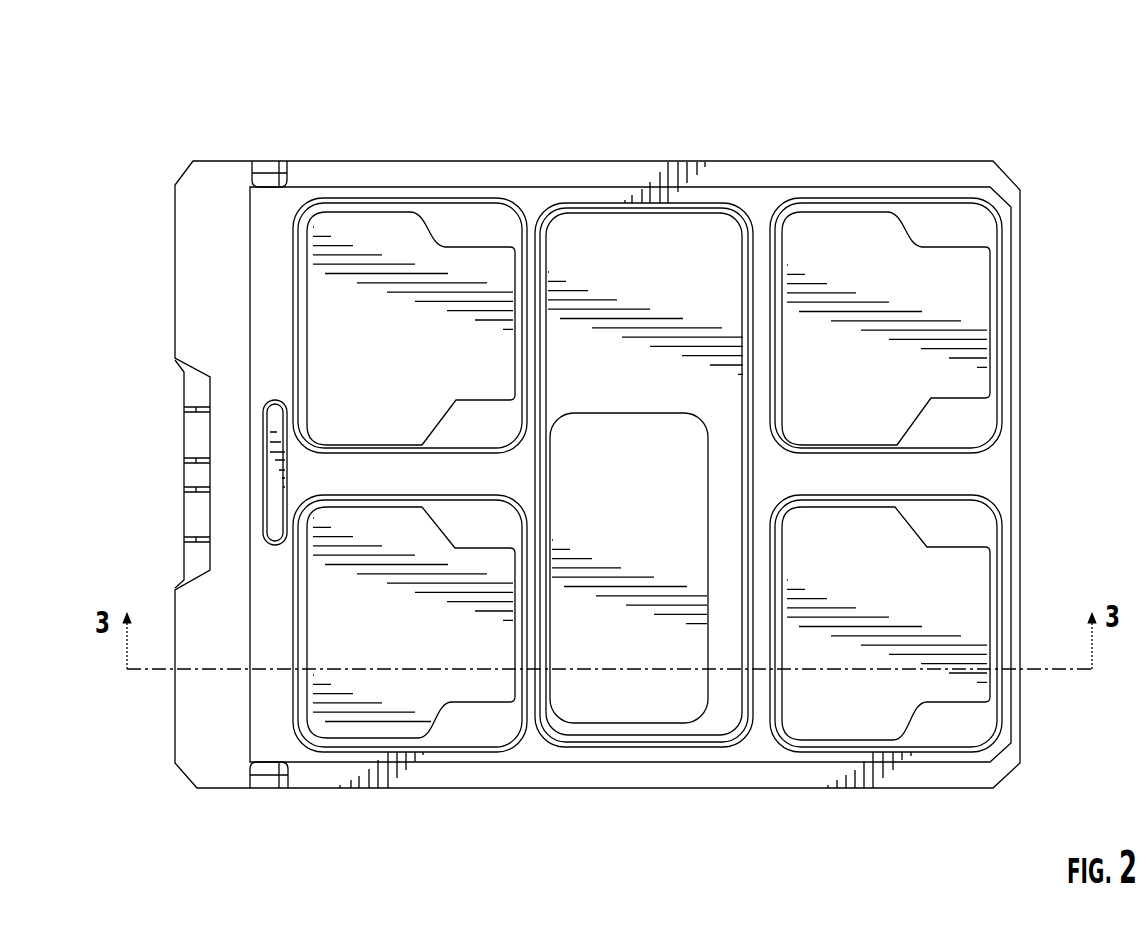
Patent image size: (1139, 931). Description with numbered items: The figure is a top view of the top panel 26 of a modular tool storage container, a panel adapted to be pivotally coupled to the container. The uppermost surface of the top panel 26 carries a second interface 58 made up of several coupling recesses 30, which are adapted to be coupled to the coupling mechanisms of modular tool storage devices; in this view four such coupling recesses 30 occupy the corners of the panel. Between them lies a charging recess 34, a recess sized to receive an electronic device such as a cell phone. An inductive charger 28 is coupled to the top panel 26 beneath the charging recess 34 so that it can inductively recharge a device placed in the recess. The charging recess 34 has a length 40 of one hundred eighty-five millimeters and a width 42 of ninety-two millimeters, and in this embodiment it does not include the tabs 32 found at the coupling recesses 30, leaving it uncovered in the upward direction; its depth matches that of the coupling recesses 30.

The top panel 26 is at (1027, 428).
The inductive charger 28 is at (696, 443).
The coupling recesses 30 is at (562, 427).
The tabs 32 is at (470, 222).
The charging recess 34 is at (717, 227).
The length 40 is at (613, 236).
The width 42 is at (730, 476).
The second interface 58 is at (428, 592).